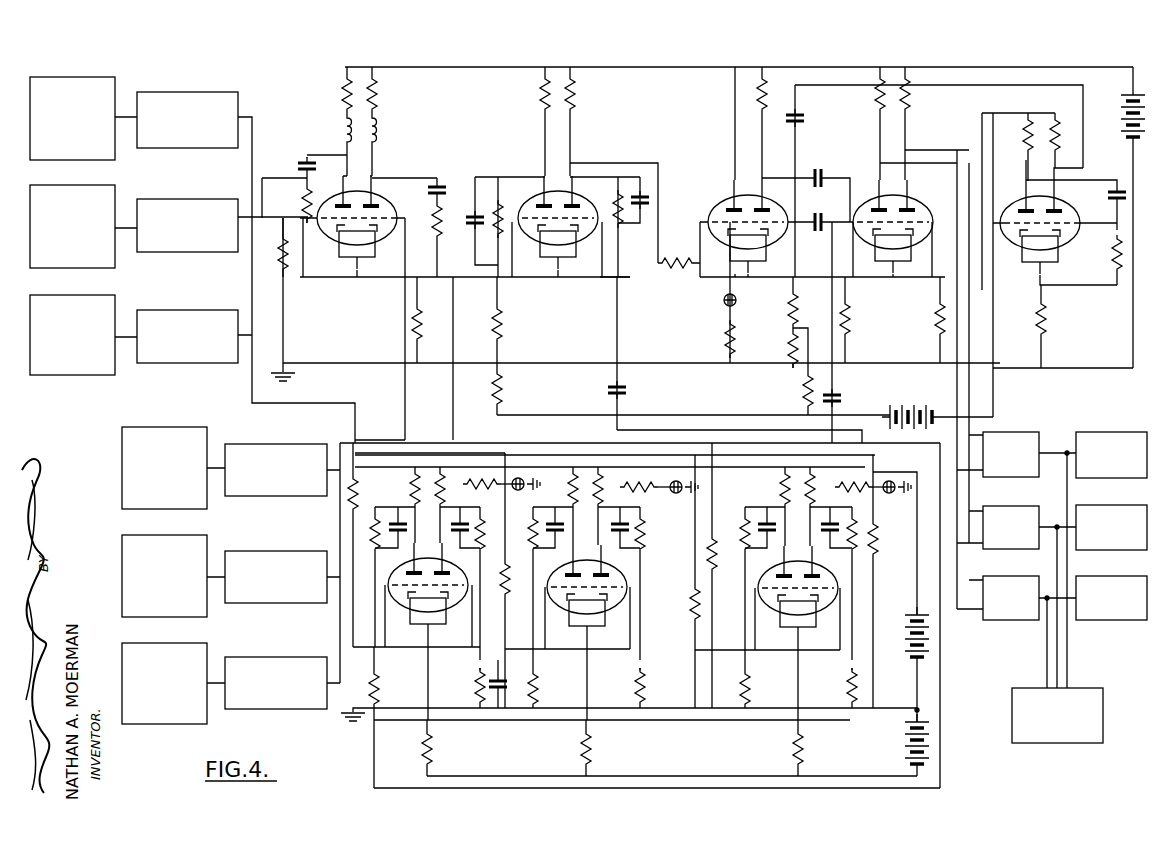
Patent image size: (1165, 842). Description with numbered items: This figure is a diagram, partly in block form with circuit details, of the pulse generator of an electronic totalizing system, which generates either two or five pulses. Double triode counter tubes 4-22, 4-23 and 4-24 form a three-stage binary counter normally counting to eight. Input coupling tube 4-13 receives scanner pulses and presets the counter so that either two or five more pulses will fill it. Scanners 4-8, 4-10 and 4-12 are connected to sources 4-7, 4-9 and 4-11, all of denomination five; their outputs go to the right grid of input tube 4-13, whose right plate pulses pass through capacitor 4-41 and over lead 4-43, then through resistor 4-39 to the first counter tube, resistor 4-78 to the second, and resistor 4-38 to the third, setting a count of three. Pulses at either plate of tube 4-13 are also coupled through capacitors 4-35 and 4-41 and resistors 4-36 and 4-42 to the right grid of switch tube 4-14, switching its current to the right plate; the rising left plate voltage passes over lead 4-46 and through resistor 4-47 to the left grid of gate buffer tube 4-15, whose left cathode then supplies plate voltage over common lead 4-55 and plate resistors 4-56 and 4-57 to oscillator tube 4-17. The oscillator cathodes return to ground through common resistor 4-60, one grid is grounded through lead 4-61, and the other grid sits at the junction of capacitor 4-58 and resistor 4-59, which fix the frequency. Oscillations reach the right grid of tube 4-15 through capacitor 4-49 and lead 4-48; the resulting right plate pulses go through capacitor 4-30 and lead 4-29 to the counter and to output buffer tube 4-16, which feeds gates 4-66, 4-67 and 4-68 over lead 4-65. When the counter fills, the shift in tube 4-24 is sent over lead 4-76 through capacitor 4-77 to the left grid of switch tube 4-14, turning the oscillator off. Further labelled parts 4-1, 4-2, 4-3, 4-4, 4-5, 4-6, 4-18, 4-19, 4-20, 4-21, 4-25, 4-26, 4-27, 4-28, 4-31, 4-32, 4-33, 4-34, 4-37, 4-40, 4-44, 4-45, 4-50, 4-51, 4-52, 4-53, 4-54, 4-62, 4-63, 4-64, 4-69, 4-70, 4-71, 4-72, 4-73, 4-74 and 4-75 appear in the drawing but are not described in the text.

The source 1 denomination 2 4-1 is at (62, 78).
The scanner 1-2 4-2 is at (172, 92).
The source 2 denomination 2 4-3 is at (60, 186).
The scanner 2-2 4-4 is at (175, 199).
The source 3 denomination 2 4-5 is at (60, 296).
The scanner 3-2 4-6 is at (175, 310).
The source 4-7 is at (150, 428).
The scanner 4-8 is at (260, 444).
The source 4-9 is at (152, 536).
The scanner 4-10 is at (262, 551).
The source 4-11 is at (152, 644).
The scanner 4-12 is at (262, 657).
The input coupling tube 4-13 is at (360, 231).
The switch tube 4-14 is at (558, 222).
The gate buffer tube 4-15 is at (748, 226).
The output buffer tube 4-16 is at (893, 226).
The oscillator tube 4-17 is at (1040, 227).
The battery 4-18 is at (1118, 100).
The battery 4-19 is at (929, 400).
The ground bus conductor 4-20 is at (652, 365).
The conductor 4-21 is at (733, 417).
The first counter tube 4-22 is at (428, 589).
The second counter tube 4-23 is at (587, 591).
The third counter tube 4-24 is at (798, 592).
The battery 4-25 is at (912, 612).
The battery 4-26 is at (905, 738).
The junction conductor 4-27 is at (880, 708).
The conductor 4-28 is at (680, 776).
The lead 4-29 is at (372, 760).
The capacitor 4-30 is at (850, 387).
The resistor 4-31 is at (430, 755).
The resistor 4-32 is at (590, 755).
The resistor 4-33 is at (802, 755).
The resistor 4-34 is at (358, 490).
The capacitor 4-35 is at (297, 160).
The resistor 4-36 is at (290, 232).
The resistor 4-37 is at (710, 540).
The resistor 4-38 is at (770, 482).
The resistor 4-39 is at (507, 582).
The resistor 4-40 is at (876, 540).
The capacitor 4-41 is at (440, 180).
The resistor 4-42 is at (432, 215).
The lead 4-43 is at (450, 395).
The resistor 4-44 is at (480, 290).
The resistor 4-45 is at (500, 392).
The lead 4-46 is at (640, 160).
The resistor 4-47 is at (690, 275).
The lead 4-48 is at (798, 140).
The capacitor 4-49 is at (806, 118).
The capacitor 4-50 is at (815, 170).
The capacitor 4-51 is at (874, 180).
The resistor 4-52 is at (786, 292).
The resistor 4-53 is at (786, 340).
The resistor 4-54 is at (800, 385).
The common lead 4-55 is at (1014, 106).
The resistor 4-56 is at (1020, 150).
The resistor 4-57 is at (1068, 110).
The capacitor 4-58 is at (1125, 176).
The resistor 4-59 is at (1112, 245).
The common resistor 4-60 is at (1046, 322).
The lead 4-61 is at (995, 338).
The glow tube 4-62 is at (722, 298).
The resistor 4-63 is at (727, 330).
The conductor 4-64 is at (970, 398).
The lead 4-65 is at (950, 152).
The gate 4-66 is at (1003, 432).
The gate 4-67 is at (1000, 506).
The gate 4-68 is at (998, 576).
The adder 1 4-69 is at (1086, 432).
The adder 2 4-70 is at (1090, 505).
The adder 3 4-71 is at (1092, 576).
The conductor 4-72 is at (1046, 648).
The conductor 4-73 is at (1058, 628).
The conductor 4-74 is at (1068, 672).
The total adder 4-75 is at (1012, 690).
The lead 4-76 is at (616, 430).
The capacitor 4-77 is at (630, 70).
The resistor 4-78 is at (692, 588).